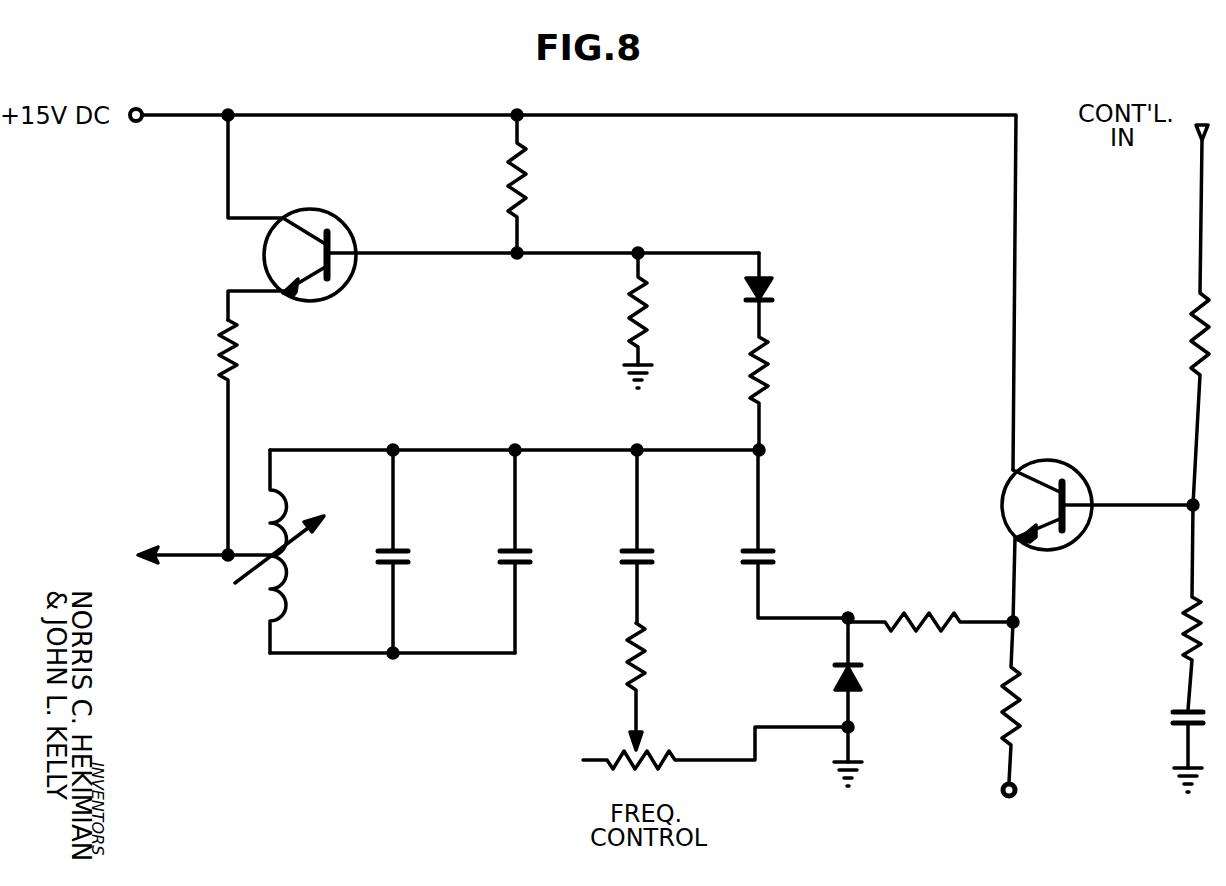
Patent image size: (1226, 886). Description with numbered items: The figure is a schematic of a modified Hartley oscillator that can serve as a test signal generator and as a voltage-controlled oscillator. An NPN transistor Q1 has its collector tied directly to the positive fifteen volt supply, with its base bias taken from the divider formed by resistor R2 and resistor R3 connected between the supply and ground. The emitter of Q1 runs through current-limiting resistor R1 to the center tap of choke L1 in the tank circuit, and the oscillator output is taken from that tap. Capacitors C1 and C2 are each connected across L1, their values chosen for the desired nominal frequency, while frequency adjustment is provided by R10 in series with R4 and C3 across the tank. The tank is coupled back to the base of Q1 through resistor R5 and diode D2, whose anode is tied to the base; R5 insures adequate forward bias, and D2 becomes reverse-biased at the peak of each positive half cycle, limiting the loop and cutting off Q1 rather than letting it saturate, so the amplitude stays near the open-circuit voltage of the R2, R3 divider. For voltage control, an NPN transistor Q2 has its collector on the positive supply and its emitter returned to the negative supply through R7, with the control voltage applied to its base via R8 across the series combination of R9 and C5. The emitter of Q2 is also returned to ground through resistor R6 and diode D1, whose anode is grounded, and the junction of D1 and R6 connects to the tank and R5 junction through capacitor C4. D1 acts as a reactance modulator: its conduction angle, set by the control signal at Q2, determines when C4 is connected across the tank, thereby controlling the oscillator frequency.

The NPN transistor Q1 is at (386, 240).
The NPN transistor Q2 is at (1097, 541).
The current-limiting resistor R1 is at (242, 349).
The base bias resistor R2 is at (530, 171).
The base bias resistor R3 is at (629, 302).
The resistor R4 is at (652, 666).
The resistor R5 is at (772, 350).
The resistor R6 is at (914, 605).
The resistor R7 is at (1024, 708).
The resistor R8 is at (1186, 330).
The resistor R9 is at (1176, 632).
The frequency adjustment resistor R10 is at (656, 750).
The tank capacitor C1 is at (410, 556).
The tank capacitor C2 is at (532, 556).
The capacitor C3 is at (654, 556).
The capacitor C4 is at (795, 544).
The capacitor C5 is at (1172, 720).
The diode D1 is at (863, 667).
The diode D2 is at (776, 298).
The choke L1 is at (230, 551).